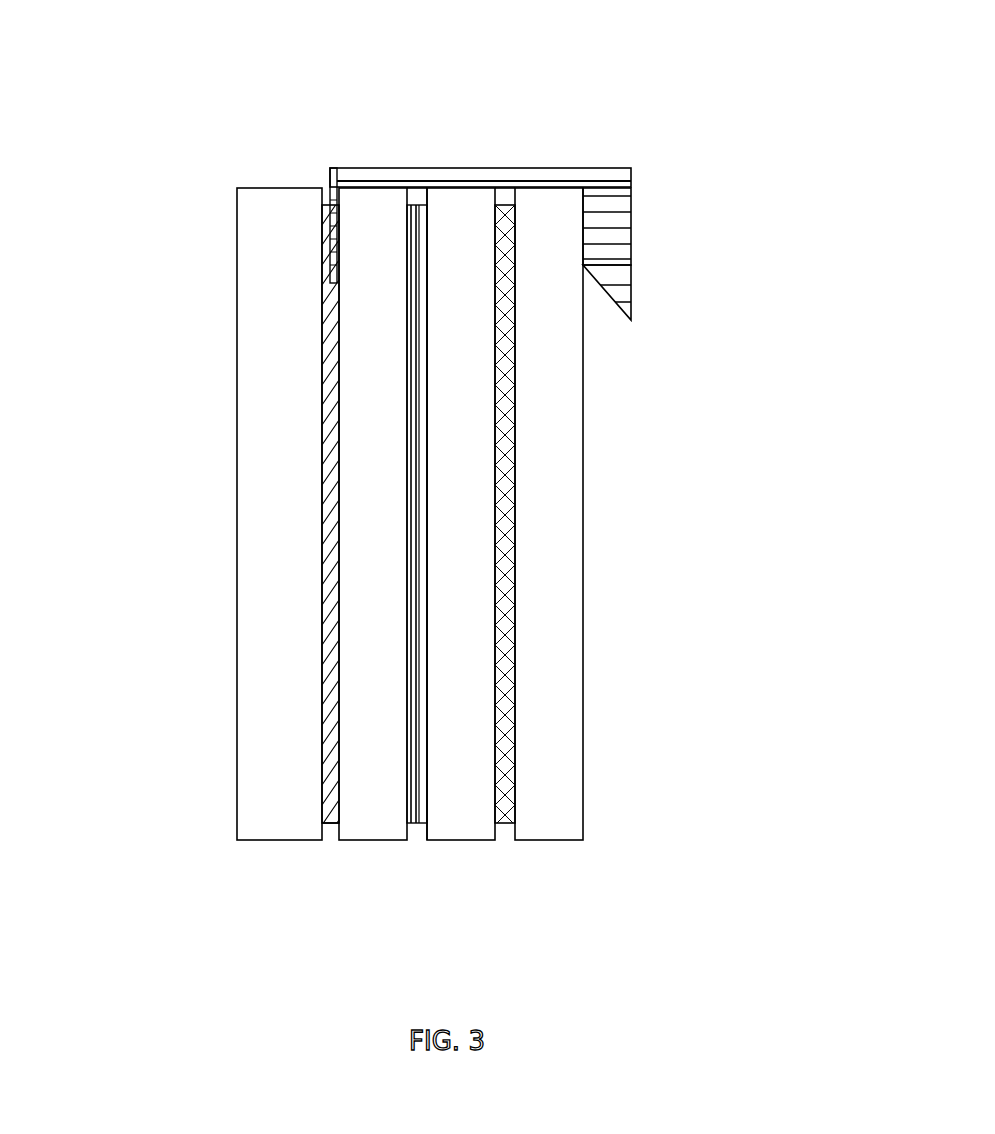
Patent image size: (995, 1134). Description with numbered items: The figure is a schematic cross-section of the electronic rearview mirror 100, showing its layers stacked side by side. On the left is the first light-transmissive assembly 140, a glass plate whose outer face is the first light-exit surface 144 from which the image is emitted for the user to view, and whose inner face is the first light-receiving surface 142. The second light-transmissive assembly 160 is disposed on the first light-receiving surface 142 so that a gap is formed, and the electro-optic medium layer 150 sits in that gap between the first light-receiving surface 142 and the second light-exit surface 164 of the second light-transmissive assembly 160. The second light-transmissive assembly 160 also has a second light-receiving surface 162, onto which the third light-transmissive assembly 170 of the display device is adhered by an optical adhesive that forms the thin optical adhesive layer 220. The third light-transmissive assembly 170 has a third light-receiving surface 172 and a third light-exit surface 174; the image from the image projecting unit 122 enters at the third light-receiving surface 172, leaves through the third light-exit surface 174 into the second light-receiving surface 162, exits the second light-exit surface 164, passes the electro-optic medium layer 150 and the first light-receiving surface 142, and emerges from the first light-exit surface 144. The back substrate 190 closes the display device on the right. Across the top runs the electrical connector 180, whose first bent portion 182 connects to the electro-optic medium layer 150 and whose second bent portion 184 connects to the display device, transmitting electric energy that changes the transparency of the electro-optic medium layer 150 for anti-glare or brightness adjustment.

The electronic rearview mirror 100 is at (182, 127).
The image projecting unit 122 is at (586, 506).
The first light-transmissive assembly 140 is at (211, 600).
The first light-receiving surface 142 is at (230, 606).
The first light-exit surface 144 is at (237, 523).
The electro-optic medium layer 150 is at (320, 792).
The second light-transmissive assembly 160 is at (392, 792).
The second light-receiving surface 162 is at (410, 823).
The second light-exit surface 164 is at (330, 840).
The third light-transmissive assembly 170 is at (556, 514).
The third light-receiving surface 172 is at (500, 488).
The third light-exit surface 174 is at (428, 405).
The electrical connector 180 is at (592, 204).
The first bent portion 182 is at (332, 187).
The second bent portion 184 is at (630, 263).
The back substrate 190 is at (562, 800).
The optical adhesive layer 220 is at (464, 593).